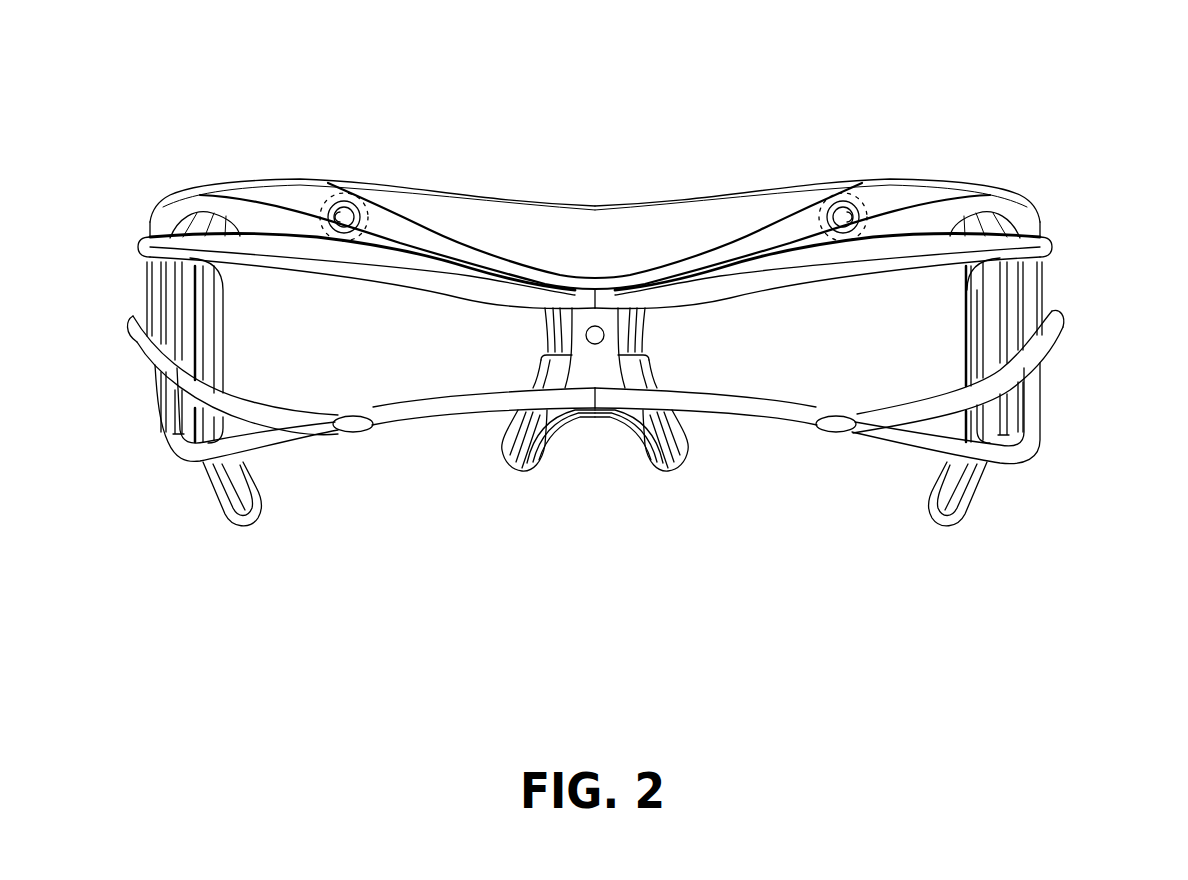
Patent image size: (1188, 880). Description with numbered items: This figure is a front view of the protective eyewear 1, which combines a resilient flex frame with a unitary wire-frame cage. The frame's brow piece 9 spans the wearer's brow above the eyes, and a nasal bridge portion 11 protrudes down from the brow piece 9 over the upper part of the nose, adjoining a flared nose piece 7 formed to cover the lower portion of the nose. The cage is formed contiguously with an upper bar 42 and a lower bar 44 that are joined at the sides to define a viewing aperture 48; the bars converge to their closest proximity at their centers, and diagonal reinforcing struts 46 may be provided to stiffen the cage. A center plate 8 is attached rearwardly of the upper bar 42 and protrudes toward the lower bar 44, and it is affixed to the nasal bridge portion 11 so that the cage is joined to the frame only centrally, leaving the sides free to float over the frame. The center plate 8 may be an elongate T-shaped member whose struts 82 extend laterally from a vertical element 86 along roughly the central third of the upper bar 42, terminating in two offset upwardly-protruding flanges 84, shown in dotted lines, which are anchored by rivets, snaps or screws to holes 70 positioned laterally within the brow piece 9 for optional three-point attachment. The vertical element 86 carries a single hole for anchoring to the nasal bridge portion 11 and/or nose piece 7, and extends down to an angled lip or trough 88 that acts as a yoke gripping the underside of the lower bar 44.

The protective eyewear 1 is at (613, 339).
The nose piece 7 is at (517, 478).
The center plate 8 is at (607, 374).
The brow piece 9 is at (887, 193).
The nasal bridge portion 11 is at (552, 325).
The upper bar 42 is at (1018, 243).
The lower bar 44 is at (427, 418).
The diagonal reinforcing strut 46 is at (1012, 378).
The viewing aperture 48 is at (360, 352).
The holes 70 is at (331, 203).
The struts 82 is at (375, 256).
The upwardly-protruding flanges 84 is at (321, 205).
The vertical element 86 is at (582, 318).
The angled lip or trough 88 is at (600, 420).